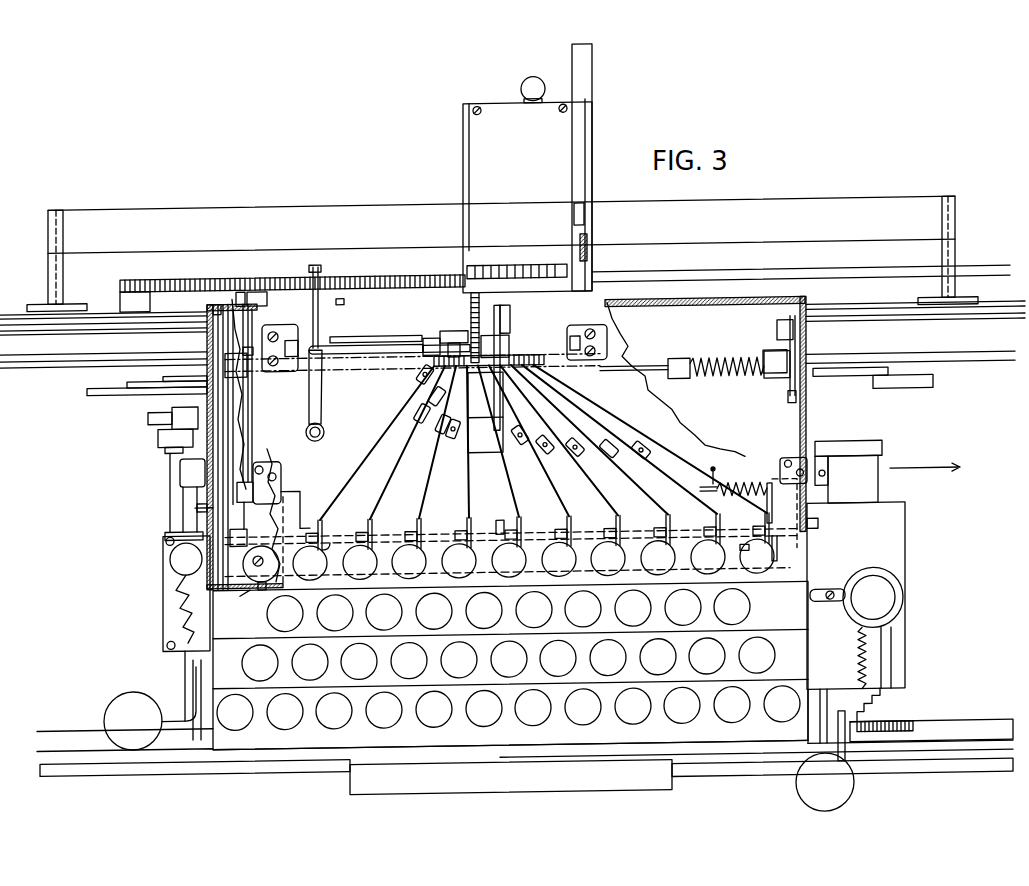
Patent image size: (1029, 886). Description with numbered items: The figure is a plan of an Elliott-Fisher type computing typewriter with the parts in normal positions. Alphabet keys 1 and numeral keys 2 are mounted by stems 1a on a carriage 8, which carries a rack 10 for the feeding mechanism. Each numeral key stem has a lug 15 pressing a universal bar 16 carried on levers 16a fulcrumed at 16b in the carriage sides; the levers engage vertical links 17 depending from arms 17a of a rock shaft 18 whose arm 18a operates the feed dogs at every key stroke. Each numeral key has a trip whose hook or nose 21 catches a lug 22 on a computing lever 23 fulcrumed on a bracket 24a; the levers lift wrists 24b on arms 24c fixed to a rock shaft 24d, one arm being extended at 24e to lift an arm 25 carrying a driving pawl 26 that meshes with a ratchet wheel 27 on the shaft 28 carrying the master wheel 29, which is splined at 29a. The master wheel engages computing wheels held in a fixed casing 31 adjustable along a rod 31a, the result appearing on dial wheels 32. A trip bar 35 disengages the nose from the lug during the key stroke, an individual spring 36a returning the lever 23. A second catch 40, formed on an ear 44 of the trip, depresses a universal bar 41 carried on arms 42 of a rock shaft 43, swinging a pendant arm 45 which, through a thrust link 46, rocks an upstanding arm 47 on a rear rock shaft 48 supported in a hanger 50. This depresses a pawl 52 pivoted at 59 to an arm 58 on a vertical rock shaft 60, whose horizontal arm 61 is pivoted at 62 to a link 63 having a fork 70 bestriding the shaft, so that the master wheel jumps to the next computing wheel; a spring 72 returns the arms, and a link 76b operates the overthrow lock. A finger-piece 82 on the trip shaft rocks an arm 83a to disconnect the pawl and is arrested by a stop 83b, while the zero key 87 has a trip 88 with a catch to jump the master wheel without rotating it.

The alphabet keys 1 is at (272, 612).
The stems 1a is at (240, 592).
The numeral keys 2 is at (738, 582).
The carriage 8 is at (722, 301).
The rack 10 is at (130, 277).
The lug 15 is at (262, 586).
The universal bar 16 is at (763, 587).
The levers 16a is at (207, 350).
The fulcrum 16b is at (238, 430).
The vertical links 17 is at (207, 335).
The arms 17a is at (209, 302).
The rock shaft 18 is at (640, 364).
The arm 18a is at (580, 340).
The hook or nose 21 is at (312, 530).
The lugs 22 is at (427, 531).
The computing levers 23 is at (412, 450).
The brackets 24a is at (420, 380).
The elongated wrists 24b is at (398, 365).
The arms 24c is at (456, 440).
The rock shaft 24d is at (488, 452).
The extension 24e is at (510, 315).
The arm 25 is at (512, 345).
The driving pawl 26 is at (480, 338).
The ratchet wheel 27 is at (497, 380).
The shaft 28 is at (430, 336).
The master wheel 29 is at (470, 323).
The spline 29a is at (452, 340).
The casing 31 is at (463, 158).
The rod 31a is at (404, 209).
The dial wheels 32 is at (540, 266).
The trip-bar 35 is at (272, 540).
The spring 36a is at (552, 452).
The nose or catch 40 is at (325, 524).
The universal bar 41 is at (375, 530).
The arms 42 is at (297, 488).
The rock shaft 43 is at (500, 522).
The ear 44 is at (320, 548).
The pendant arm 45 is at (240, 482).
The thrust link 46 is at (250, 454).
The upstanding arm 47 is at (243, 288).
The rock shaft 48 is at (340, 296).
The hanger 50 is at (260, 288).
The pawl 52 is at (416, 274).
The arm 58 is at (300, 334).
The pivot 59 is at (312, 268).
The vertical rock shaft 60 is at (316, 440).
The horizontal arm 61 is at (320, 400).
The pivot 62 is at (328, 344).
The link 63 is at (358, 336).
The fork 70 is at (430, 345).
The spring 72 is at (716, 490).
The link 76b is at (250, 410).
The finger-piece 82 is at (180, 468).
The arm 83a is at (248, 558).
The stop 83b is at (195, 503).
The key 87 is at (777, 566).
The trip 88 is at (747, 556).